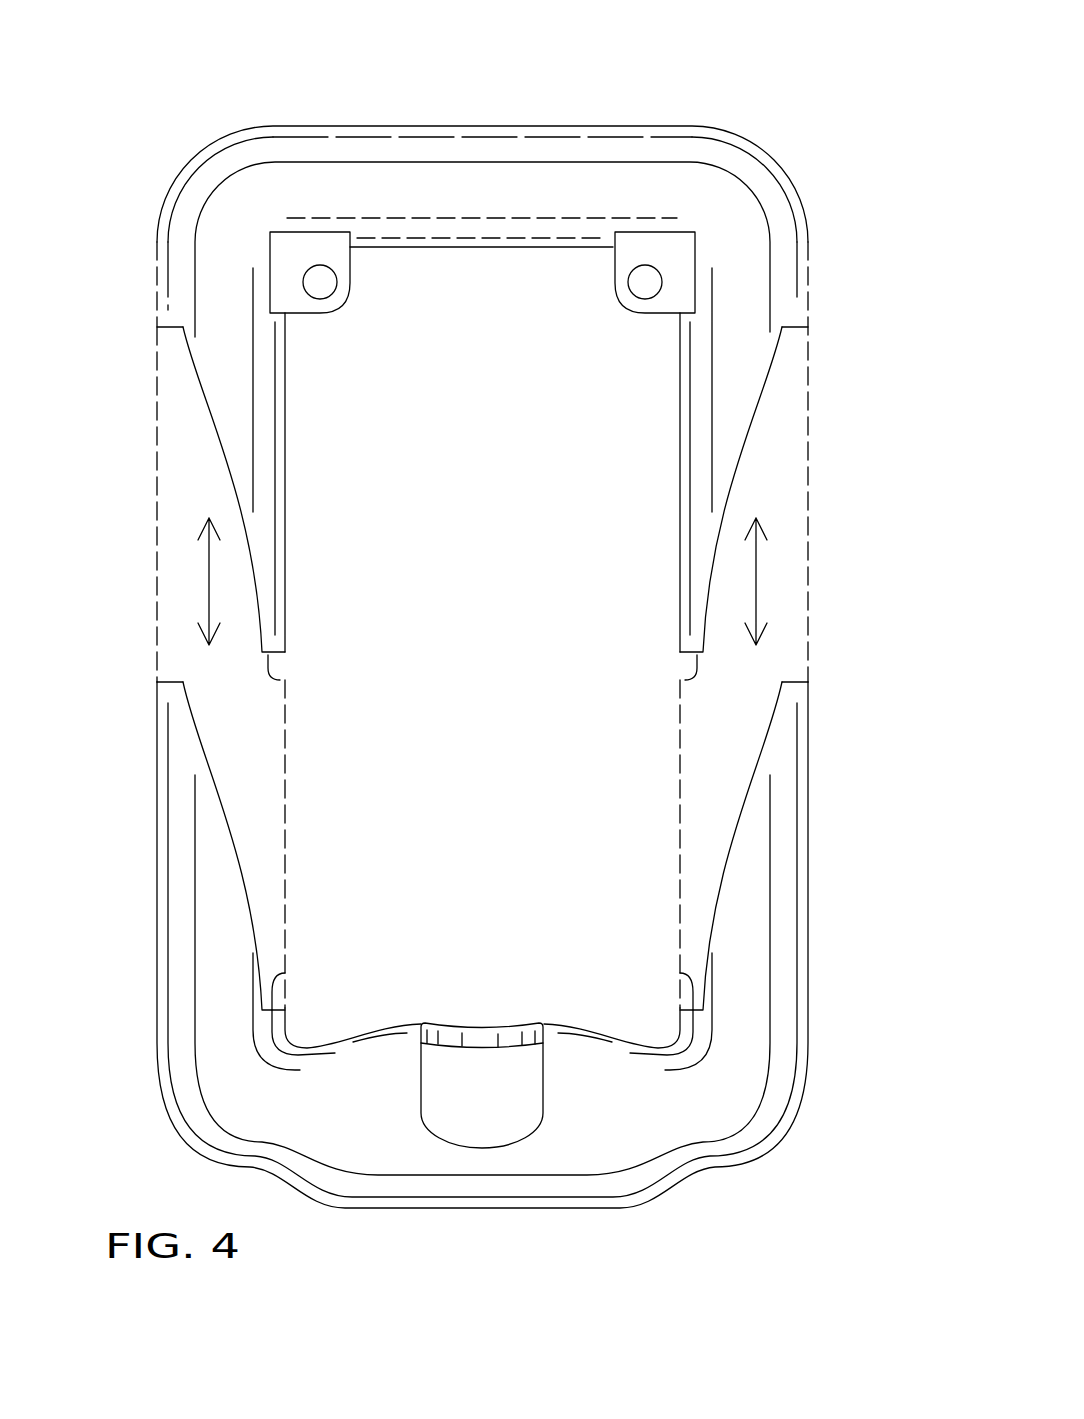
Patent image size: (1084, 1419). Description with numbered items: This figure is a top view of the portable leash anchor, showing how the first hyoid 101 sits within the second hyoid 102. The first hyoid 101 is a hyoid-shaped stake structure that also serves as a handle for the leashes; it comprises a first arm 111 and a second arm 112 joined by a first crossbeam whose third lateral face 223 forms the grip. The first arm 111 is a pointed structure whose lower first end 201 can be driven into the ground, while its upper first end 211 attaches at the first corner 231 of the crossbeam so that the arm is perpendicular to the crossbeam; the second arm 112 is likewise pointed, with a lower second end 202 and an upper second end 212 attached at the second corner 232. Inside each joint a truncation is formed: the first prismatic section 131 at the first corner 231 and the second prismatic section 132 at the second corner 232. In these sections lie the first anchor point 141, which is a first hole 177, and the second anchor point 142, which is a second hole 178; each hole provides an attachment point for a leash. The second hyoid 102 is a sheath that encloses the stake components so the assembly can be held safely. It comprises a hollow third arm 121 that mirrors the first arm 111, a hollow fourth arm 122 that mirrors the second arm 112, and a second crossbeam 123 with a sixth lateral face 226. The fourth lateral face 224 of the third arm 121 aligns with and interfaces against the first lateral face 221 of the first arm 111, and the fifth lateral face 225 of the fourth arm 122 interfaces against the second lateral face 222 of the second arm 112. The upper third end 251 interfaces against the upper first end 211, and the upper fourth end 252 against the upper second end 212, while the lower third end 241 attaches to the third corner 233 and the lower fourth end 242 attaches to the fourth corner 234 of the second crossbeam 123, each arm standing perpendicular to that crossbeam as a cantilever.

The first hyoid 101 is at (878, 125).
The second hyoid 102 is at (878, 682).
The first arm 111 is at (358, 650).
The second arm 112 is at (643, 460).
The third arm 121 is at (157, 830).
The fourth arm 122 is at (808, 928).
The second crossbeam 123 is at (480, 1208).
The first prismatic section 131 is at (307, 228).
The second prismatic section 132 is at (657, 228).
The first anchor point 141 is at (292, 263).
The second anchor point 142 is at (671, 261).
The first hole 177 is at (322, 265).
The second hole 178 is at (645, 265).
The lower first end 201 is at (280, 680).
The lower second end 202 is at (685, 680).
The upper first end 211 is at (168, 334).
The upper second end 212 is at (793, 328).
The first lateral face 221 is at (218, 452).
The second lateral face 222 is at (760, 427).
The third lateral face 223 is at (470, 125).
The fourth lateral face 224 is at (223, 817).
The fifth lateral face 225 is at (727, 856).
The sixth lateral face 226 is at (395, 1022).
The first corner 231 is at (173, 183).
The second corner 232 is at (770, 150).
The third corner 233 is at (193, 1142).
The fourth corner 234 is at (770, 1137).
The lower third end 241 is at (285, 973).
The lower fourth end 242 is at (692, 1008).
The upper third end 251 is at (165, 682).
The upper fourth end 252 is at (795, 682).